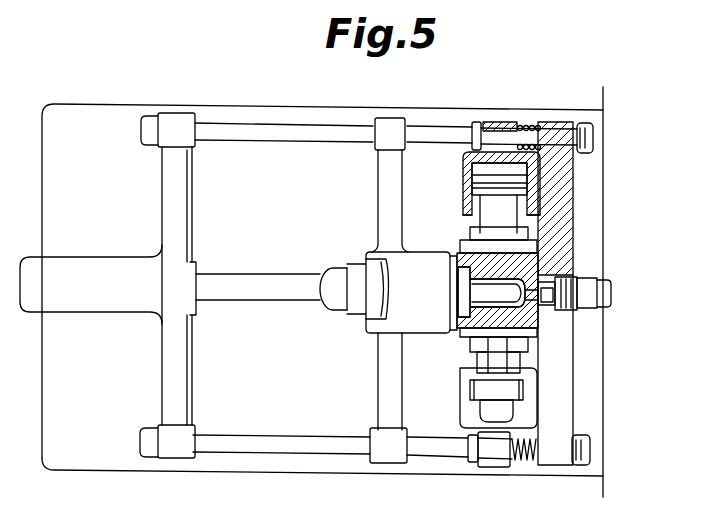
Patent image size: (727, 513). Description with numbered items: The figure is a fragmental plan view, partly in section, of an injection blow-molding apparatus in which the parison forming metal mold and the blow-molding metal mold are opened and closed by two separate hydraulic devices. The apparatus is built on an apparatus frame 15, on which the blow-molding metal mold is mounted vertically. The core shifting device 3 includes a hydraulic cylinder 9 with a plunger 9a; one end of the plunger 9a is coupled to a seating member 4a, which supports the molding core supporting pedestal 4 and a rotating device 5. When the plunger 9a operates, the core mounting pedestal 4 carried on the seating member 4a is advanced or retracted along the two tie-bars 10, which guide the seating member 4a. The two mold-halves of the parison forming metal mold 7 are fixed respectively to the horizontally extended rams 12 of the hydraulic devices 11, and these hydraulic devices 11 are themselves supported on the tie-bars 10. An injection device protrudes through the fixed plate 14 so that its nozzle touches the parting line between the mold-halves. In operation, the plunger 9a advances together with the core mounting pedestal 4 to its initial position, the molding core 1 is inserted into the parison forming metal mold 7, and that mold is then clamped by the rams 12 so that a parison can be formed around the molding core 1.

The molding core 1 is at (490, 284).
The core shifting device 3 is at (126, 252).
The molding core supporting pedestal 4 is at (455, 324).
The seating member 4a is at (368, 332).
The rotating device 5 is at (350, 283).
The parison forming metal mold 7 is at (562, 283).
The hydraulic cylinder 9 is at (92, 270).
The plunger 9a is at (272, 288).
The tie-bars 10 is at (265, 124).
The hydraulic devices 11 is at (470, 180).
The rams 12 is at (507, 218).
The fixed plate 14 is at (560, 166).
The apparatus frame 15 is at (110, 118).